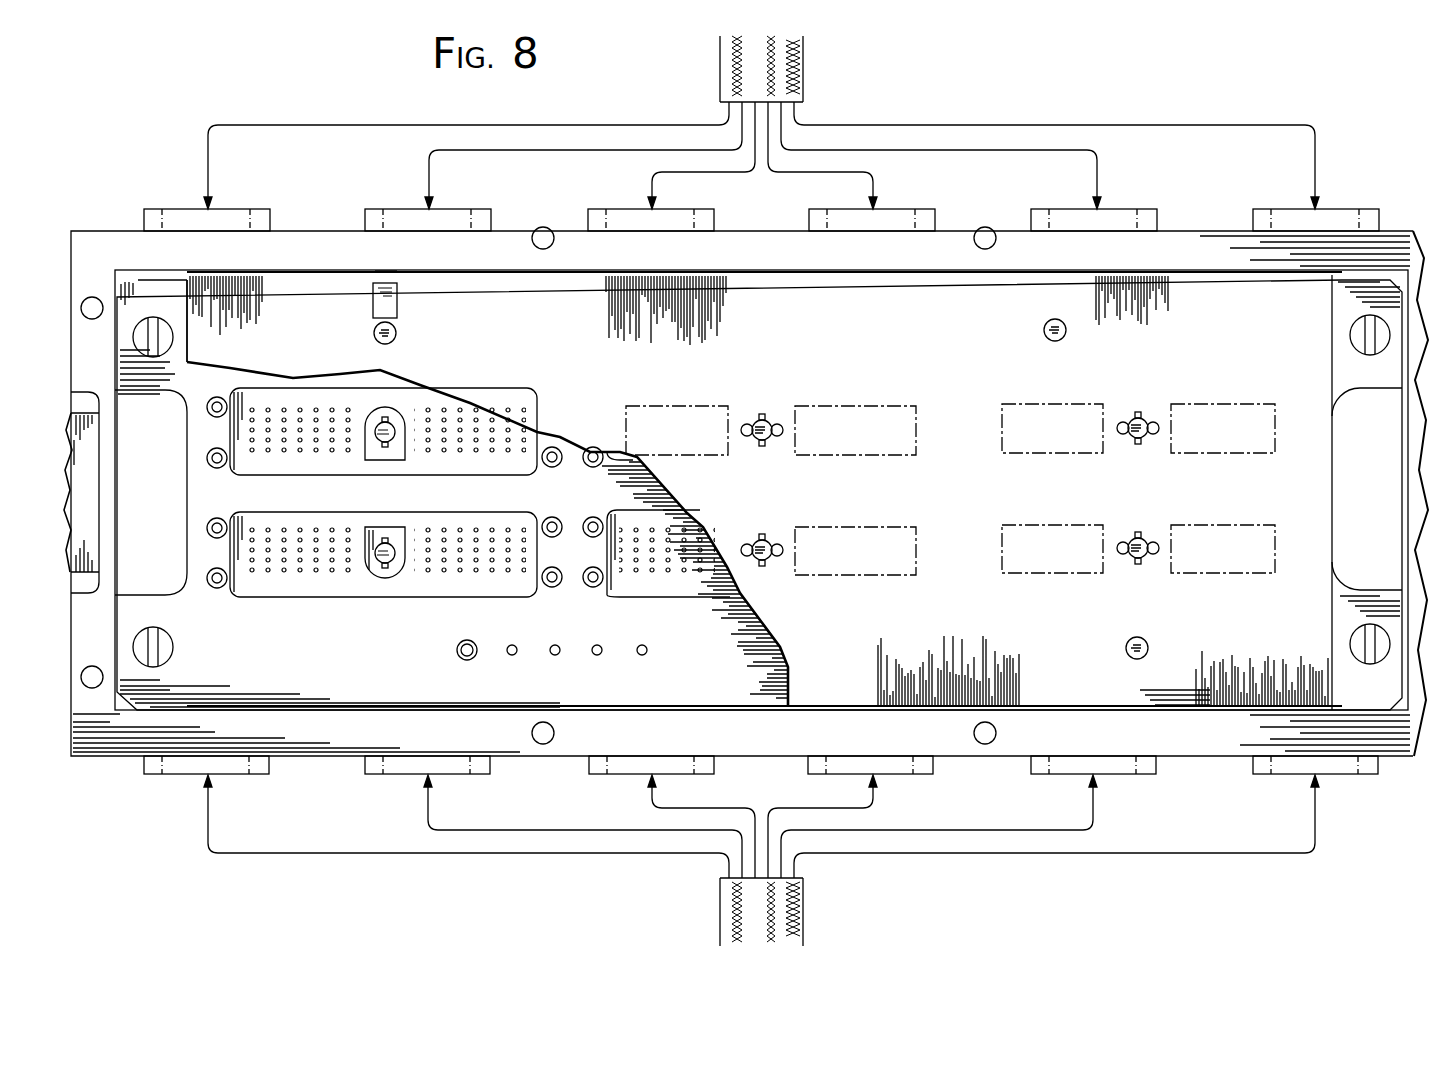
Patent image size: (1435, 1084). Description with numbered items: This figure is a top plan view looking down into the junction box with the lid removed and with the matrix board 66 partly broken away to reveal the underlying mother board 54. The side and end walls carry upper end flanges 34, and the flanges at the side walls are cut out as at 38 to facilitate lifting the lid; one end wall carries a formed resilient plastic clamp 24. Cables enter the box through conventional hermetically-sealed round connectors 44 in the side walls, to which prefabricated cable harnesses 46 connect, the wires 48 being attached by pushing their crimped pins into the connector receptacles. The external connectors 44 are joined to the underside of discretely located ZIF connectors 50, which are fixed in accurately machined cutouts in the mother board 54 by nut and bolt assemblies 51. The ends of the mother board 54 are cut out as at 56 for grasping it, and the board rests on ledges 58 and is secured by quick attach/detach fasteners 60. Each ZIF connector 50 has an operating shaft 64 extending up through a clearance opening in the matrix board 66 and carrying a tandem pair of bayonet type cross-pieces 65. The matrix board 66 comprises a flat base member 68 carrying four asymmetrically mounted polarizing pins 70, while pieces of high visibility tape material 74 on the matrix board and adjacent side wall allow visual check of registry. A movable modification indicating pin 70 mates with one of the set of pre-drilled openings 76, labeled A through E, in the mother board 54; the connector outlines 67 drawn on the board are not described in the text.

The clamp 24 is at (94, 508).
The upper end flange 34 is at (322, 262).
The cut out 38 is at (94, 472).
The connector 44 is at (173, 209).
The cable harness 46 is at (805, 60).
The wire 48 is at (318, 128).
The ZIF connector 50 is at (288, 596).
The nut and bolt assembly 51 is at (219, 586).
The mother board 54 is at (167, 582).
The cut out 56 is at (158, 392).
The ledge 58 is at (120, 292).
The quick attach/detach fastener 60 is at (174, 330).
The operating shaft 64 is at (386, 446).
The bayonet type cross-piece 65 is at (762, 416).
The matrix board 66 is at (1194, 274).
The connector outline 67 is at (674, 402).
The flat base member 68 is at (535, 349).
The pin 70 is at (374, 334).
The high visibility tape material 74 is at (372, 298).
The set of openings 76 is at (660, 650).